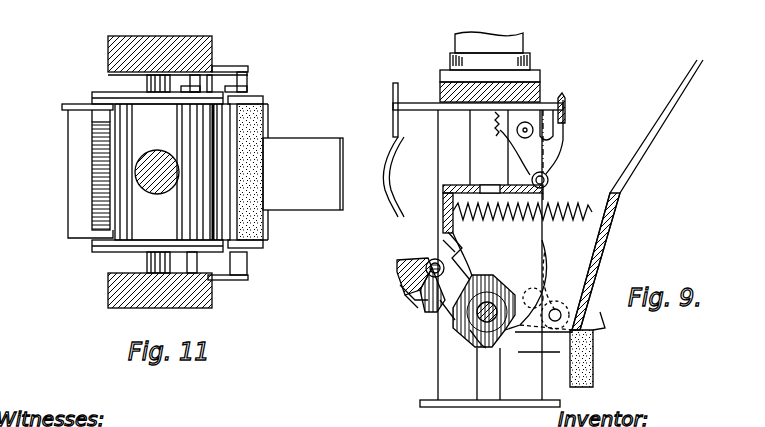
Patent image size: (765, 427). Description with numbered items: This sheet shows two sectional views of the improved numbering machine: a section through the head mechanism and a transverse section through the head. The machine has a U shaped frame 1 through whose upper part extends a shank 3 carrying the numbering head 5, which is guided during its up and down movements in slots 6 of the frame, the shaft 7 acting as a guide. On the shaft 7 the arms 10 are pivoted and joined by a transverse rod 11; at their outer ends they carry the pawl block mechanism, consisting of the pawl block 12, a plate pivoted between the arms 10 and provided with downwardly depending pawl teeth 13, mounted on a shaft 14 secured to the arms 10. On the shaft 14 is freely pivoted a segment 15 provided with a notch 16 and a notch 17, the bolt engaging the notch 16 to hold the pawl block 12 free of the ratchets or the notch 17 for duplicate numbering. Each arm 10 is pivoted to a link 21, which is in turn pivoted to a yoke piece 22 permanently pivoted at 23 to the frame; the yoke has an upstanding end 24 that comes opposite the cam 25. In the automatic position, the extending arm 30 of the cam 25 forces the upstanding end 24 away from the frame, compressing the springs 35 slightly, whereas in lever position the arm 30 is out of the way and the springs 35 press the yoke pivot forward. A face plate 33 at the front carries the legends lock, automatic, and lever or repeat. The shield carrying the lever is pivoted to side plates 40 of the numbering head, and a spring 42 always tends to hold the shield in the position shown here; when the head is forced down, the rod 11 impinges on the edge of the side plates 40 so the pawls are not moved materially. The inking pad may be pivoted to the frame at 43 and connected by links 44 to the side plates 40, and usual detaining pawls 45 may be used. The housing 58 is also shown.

In FIG. 11, the U shaped frame 1 is at (108, 296).
In FIG. 11, the shank 3 is at (163, 154).
In FIG. 9, the numbering head 5 is at (483, 149).
In FIG. 9, the slots 6 is at (484, 365).
In FIG. 11, the shaft 7 is at (150, 80).
In FIG. 9, the shaft 7 is at (478, 300).
In FIG. 9, the arms 10 is at (460, 266).
In FIG. 9, the transverse rod 11 is at (432, 254).
In FIG. 9, the pawl block 12 is at (420, 296).
In FIG. 11, the pawl teeth 13 is at (78, 188).
In FIG. 9, the pawl teeth 13 is at (430, 309).
In FIG. 9, the shaft 14 is at (392, 283).
In FIG. 9, the segment 15 is at (398, 273).
In FIG. 9, the notch 16 is at (397, 263).
In FIG. 9, the notch 17 is at (408, 306).
In FIG. 9, the link 21 is at (433, 235).
In FIG. 9, the yoke piece 22 is at (553, 155).
In FIG. 9, the pivot 23 is at (553, 116).
In FIG. 9, the upstanding end 24 is at (537, 126).
In FIG. 9, the cam 25 is at (440, 102).
In FIG. 9, the extending arm 30 is at (545, 102).
In FIG. 9, the face plate 33 is at (398, 180).
In FIG. 9, the springs 35 is at (485, 125).
In FIG. 9, the side plates 40 is at (470, 245).
In FIG. 9, the spring 42 is at (565, 217).
In FIG. 9, the pivot 43 is at (585, 292).
In FIG. 9, the links 44 is at (530, 336).
In FIG. 9, the detaining pawls 45 is at (597, 241).
In FIG. 11, the housing 58 is at (303, 174).
In FIG. 9, the housing 58 is at (392, 134).